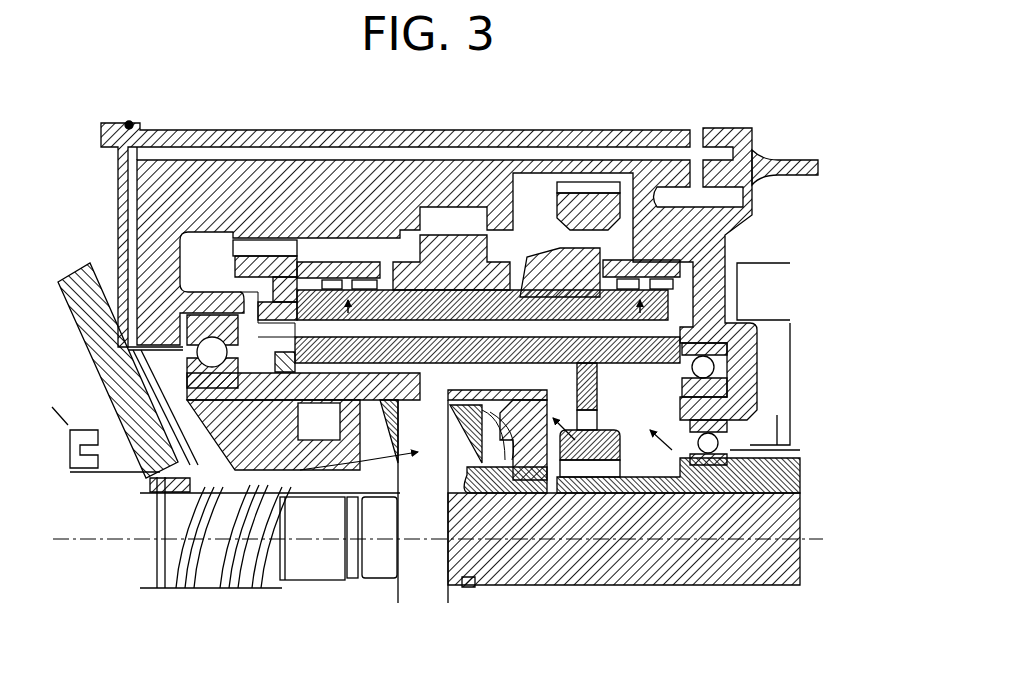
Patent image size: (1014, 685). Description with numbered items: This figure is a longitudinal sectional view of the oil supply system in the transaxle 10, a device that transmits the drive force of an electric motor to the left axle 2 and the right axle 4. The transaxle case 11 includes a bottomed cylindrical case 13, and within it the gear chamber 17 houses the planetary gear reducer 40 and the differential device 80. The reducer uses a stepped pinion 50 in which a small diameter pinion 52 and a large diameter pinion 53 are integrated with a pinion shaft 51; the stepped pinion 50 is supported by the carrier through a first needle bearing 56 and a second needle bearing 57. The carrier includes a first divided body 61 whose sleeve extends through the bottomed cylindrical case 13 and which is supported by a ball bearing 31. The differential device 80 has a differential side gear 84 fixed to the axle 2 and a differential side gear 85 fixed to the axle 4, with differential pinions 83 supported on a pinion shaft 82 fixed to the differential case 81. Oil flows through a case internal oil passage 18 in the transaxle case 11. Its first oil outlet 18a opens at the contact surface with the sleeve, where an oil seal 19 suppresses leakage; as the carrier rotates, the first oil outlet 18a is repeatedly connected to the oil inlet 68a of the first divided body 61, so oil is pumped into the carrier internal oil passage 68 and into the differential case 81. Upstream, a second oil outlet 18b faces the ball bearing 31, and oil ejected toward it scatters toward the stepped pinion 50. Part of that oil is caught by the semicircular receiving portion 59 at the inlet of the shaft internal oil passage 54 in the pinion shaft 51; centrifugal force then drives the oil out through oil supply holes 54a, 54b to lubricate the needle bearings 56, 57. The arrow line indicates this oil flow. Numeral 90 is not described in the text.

The left axle 2 is at (250, 596).
The right axle 4 is at (520, 580).
The transaxle 10 is at (205, 104).
The transaxle case 11 is at (727, 120).
The bottomed cylindrical case 13 is at (100, 155).
The gear chamber 17 is at (544, 258).
The case internal oil passage 18 is at (84, 323).
The first oil outlet 18a is at (140, 472).
The second oil outlet 18b is at (150, 366).
The oil seal 19 is at (152, 496).
The ball bearing 31 is at (100, 238).
The planetary gear reducer 40 is at (705, 512).
The stepped pinion 50 is at (527, 252).
The pinion shaft 51 is at (730, 368).
The small diameter pinion 52 is at (520, 292).
The large diameter pinion 53 is at (583, 190).
The shaft internal oil passage 54 is at (415, 262).
The oil supply hole 54a is at (642, 262).
The oil supply hole 54b is at (352, 278).
The first needle bearing 56 is at (622, 272).
The second needle bearing 57 is at (333, 262).
The receiving portion 59 is at (255, 255).
The first divided body 61 is at (293, 497).
The carrier internal oil passage 68 is at (195, 590).
The oil inlet 68a is at (160, 520).
The differential device 80 is at (672, 458).
The differential case 81 is at (587, 468).
The pinion shaft 82 is at (425, 545).
The differential pinion 83 is at (463, 587).
The differential side gear 84 is at (352, 556).
The differential side gear 85 is at (512, 560).
The sensor 90 is at (279, 292).